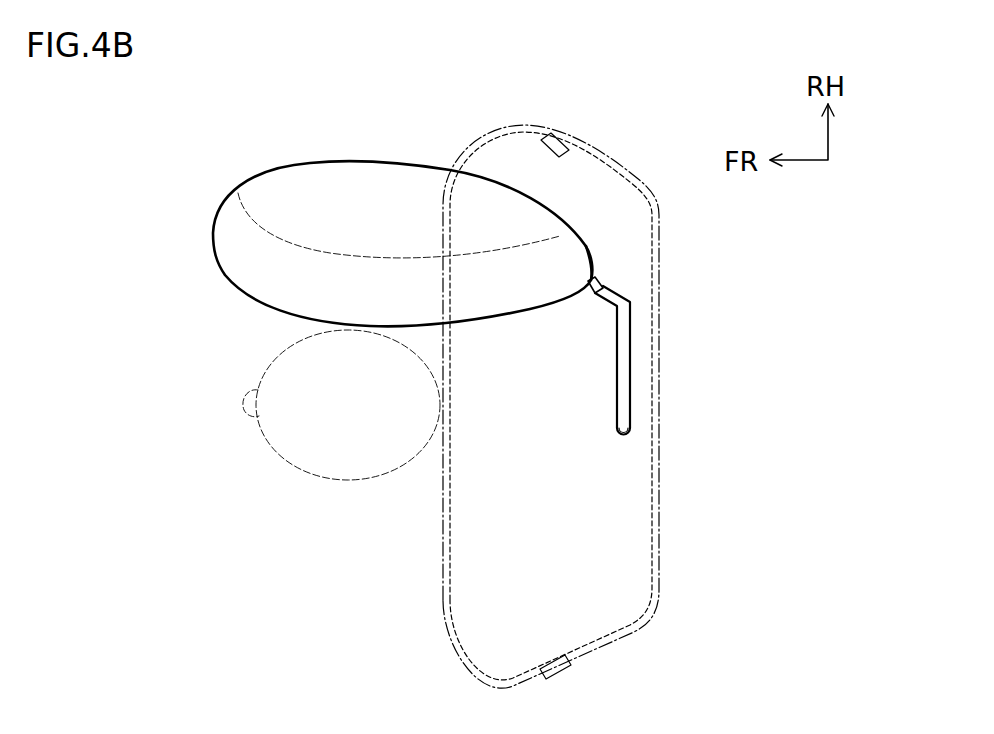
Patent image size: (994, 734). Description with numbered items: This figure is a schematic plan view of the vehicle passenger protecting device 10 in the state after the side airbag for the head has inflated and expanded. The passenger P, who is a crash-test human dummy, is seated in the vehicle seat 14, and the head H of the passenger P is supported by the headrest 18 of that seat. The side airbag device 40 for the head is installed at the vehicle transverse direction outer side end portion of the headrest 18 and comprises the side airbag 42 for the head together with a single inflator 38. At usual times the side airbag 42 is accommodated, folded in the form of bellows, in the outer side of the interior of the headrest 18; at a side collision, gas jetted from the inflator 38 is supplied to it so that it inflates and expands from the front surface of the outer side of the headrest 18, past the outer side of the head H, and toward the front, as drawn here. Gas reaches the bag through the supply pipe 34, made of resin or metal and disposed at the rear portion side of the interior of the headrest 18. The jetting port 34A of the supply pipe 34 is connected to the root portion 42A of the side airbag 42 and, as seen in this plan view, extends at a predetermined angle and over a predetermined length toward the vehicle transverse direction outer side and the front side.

The vehicle passenger protecting device 10 is at (622, 406).
The vehicle seat 14 is at (664, 603).
The headrest 18 is at (659, 537).
The supply pipe 34 is at (676, 375).
The jetting port 34A is at (599, 295).
The inflator 38 is at (624, 436).
The side airbag device for the head 40 is at (401, 195).
The side airbag for the head 42 is at (278, 180).
The root portion 42A is at (590, 291).
The passenger P is at (324, 464).
The head H is at (342, 470).